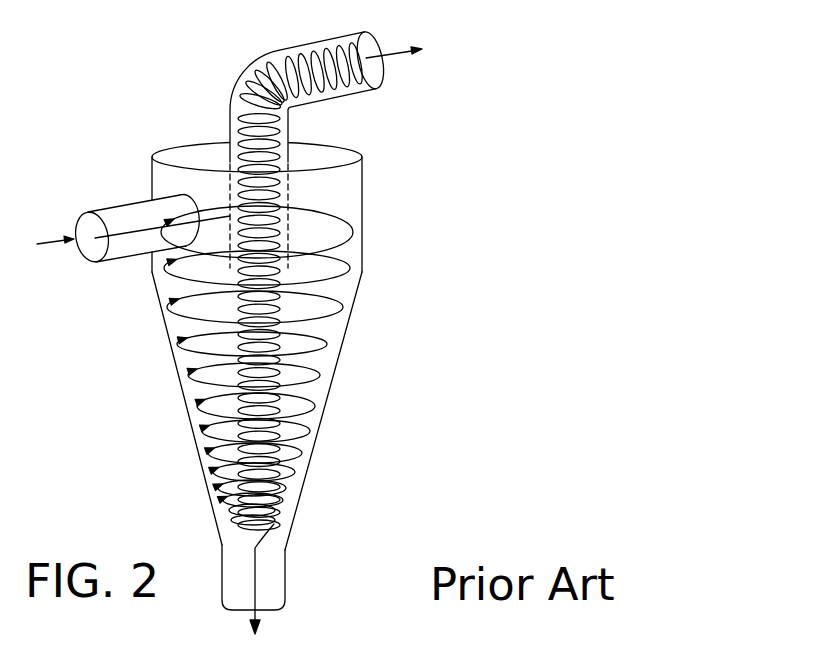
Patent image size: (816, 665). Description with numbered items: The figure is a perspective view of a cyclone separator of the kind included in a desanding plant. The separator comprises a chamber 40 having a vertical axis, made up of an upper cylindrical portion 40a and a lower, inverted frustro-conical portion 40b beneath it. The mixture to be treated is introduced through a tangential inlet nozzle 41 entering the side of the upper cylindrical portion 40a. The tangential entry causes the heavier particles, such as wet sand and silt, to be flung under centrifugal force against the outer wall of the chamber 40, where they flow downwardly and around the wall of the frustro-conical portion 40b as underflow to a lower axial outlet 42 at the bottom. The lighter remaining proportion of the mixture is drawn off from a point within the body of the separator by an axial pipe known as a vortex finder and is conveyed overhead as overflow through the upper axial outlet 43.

The chamber 40 is at (267, 346).
The upper cylindrical portion 40a is at (363, 198).
The lower inverted frustro-conical portion 40b is at (324, 417).
The tangential inlet nozzle 41 is at (107, 208).
The lower axial outlet 42 is at (286, 572).
The upper axial outlet 43 is at (263, 50).